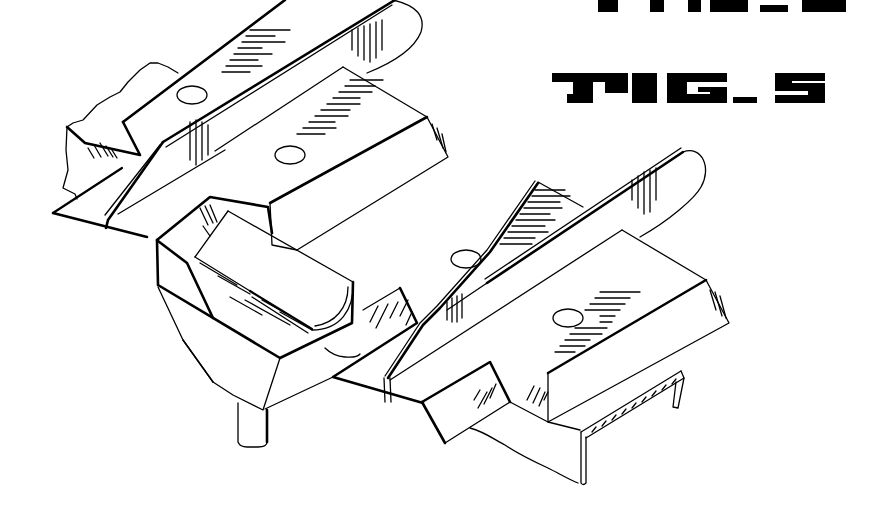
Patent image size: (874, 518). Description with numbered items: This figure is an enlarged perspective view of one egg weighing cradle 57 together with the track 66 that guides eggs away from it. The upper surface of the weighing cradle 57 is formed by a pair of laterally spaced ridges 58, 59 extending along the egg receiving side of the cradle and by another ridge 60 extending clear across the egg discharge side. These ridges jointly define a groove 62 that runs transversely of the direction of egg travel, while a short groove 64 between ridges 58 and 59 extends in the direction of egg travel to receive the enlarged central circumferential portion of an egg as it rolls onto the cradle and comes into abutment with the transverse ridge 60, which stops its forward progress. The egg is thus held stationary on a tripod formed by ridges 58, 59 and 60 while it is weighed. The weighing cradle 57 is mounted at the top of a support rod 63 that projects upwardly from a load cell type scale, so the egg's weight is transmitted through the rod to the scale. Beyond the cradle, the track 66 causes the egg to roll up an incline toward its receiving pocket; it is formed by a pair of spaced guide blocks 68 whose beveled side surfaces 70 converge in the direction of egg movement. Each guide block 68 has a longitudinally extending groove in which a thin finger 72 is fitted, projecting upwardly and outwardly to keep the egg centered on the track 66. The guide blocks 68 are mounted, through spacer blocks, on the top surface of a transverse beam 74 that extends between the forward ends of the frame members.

The weighing cradle 57 is at (173, 313).
The ridge 58 is at (157, 240).
The ridge 59 is at (273, 303).
The transverse ridge 60 is at (320, 260).
The groove 62 is at (357, 270).
The support rod 63 is at (245, 418).
The short groove 64 is at (193, 328).
The track 66 is at (392, 95).
The guide block 68 is at (408, 110).
The beveled side surface 70 is at (517, 190).
The finger 72 is at (402, 14).
The transverse beam 74 is at (671, 365).